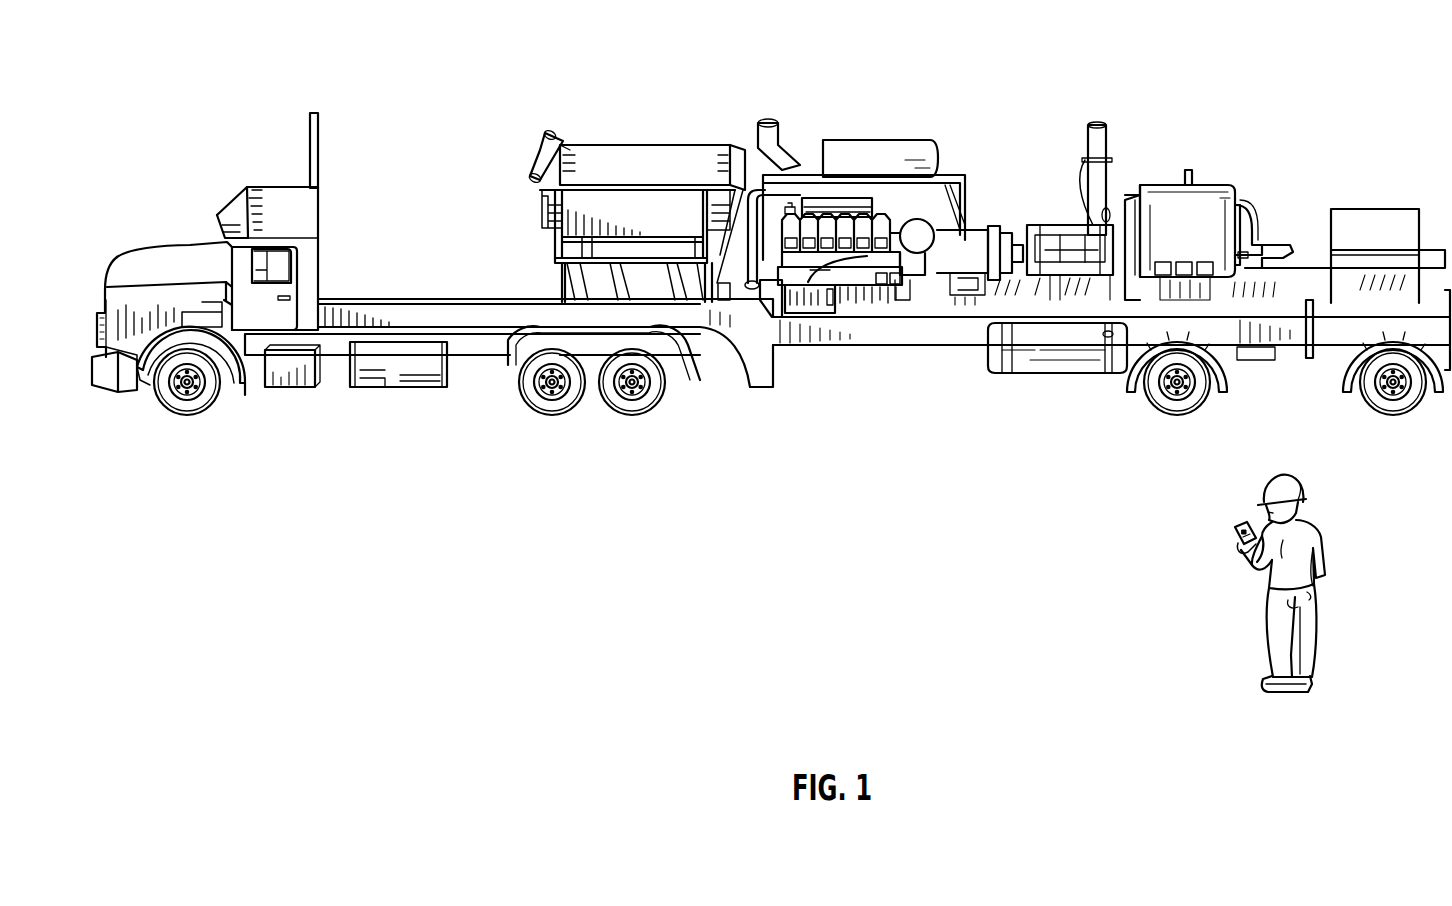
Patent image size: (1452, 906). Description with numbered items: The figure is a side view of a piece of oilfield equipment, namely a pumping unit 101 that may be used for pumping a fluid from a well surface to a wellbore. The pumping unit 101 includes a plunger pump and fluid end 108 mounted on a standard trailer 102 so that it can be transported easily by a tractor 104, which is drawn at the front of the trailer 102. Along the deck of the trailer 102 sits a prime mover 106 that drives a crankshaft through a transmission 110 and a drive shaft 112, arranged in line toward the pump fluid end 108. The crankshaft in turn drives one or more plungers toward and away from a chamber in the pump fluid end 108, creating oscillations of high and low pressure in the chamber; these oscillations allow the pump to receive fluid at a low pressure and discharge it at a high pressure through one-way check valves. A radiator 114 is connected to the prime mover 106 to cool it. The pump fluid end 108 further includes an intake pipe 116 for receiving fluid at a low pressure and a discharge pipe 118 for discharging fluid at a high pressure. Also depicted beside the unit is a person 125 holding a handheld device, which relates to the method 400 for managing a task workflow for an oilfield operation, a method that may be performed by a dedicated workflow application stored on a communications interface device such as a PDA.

The pumping unit 101 is at (192, 58).
The trailer 102 is at (885, 348).
The tractor 104 is at (290, 185).
The prime mover 106 is at (838, 200).
The pump fluid end 108 is at (1150, 185).
The transmission 110 is at (970, 225).
The drive shaft 112 is at (1040, 225).
The radiator 114 is at (642, 142).
The intake pipe 116 is at (1363, 268).
The discharge pipe 118 is at (1275, 234).
The operator 125 is at (1325, 520).
The method 400 is at (1237, 525).